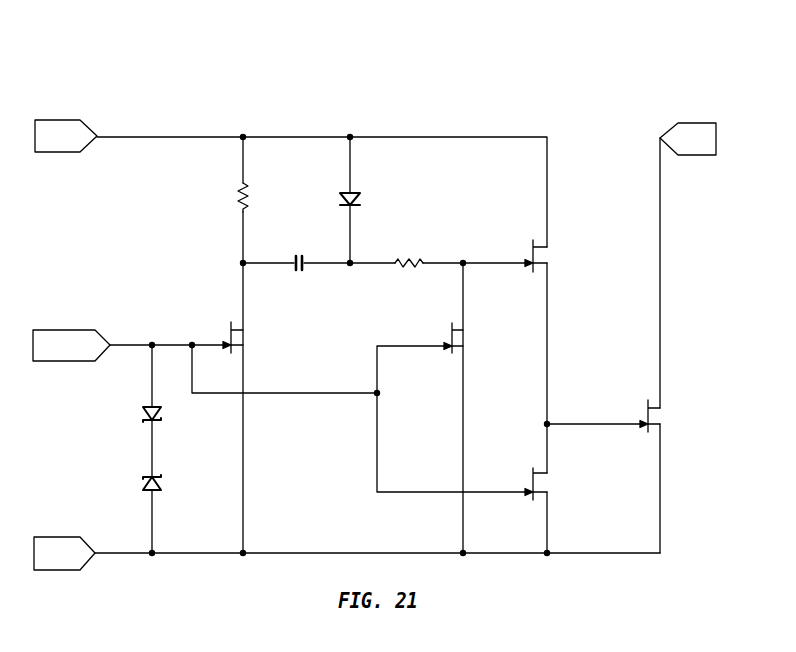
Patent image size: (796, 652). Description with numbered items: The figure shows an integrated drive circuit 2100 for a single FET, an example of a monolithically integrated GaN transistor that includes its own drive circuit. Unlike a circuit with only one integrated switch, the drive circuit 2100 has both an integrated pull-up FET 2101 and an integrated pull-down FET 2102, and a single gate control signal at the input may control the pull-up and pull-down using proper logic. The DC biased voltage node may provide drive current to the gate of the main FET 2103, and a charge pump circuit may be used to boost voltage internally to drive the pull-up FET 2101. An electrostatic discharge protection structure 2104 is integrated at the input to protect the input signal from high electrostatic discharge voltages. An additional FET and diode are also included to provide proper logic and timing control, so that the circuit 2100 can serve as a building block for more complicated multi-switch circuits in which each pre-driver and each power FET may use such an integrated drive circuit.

The integrated drive circuit 2100 is at (171, 72).
The pull-up FET (labeled by text in figure, no numeral shown) 2101 is at (588, 270).
The pull-down FET (labeled by text in figure, no numeral shown) 2102 is at (600, 496).
The main FET (labeled by text in figure, no numeral shown) 2103 is at (681, 430).
The ESD diodes (labeled by text in figure, no numeral shown) 2104 is at (129, 448).